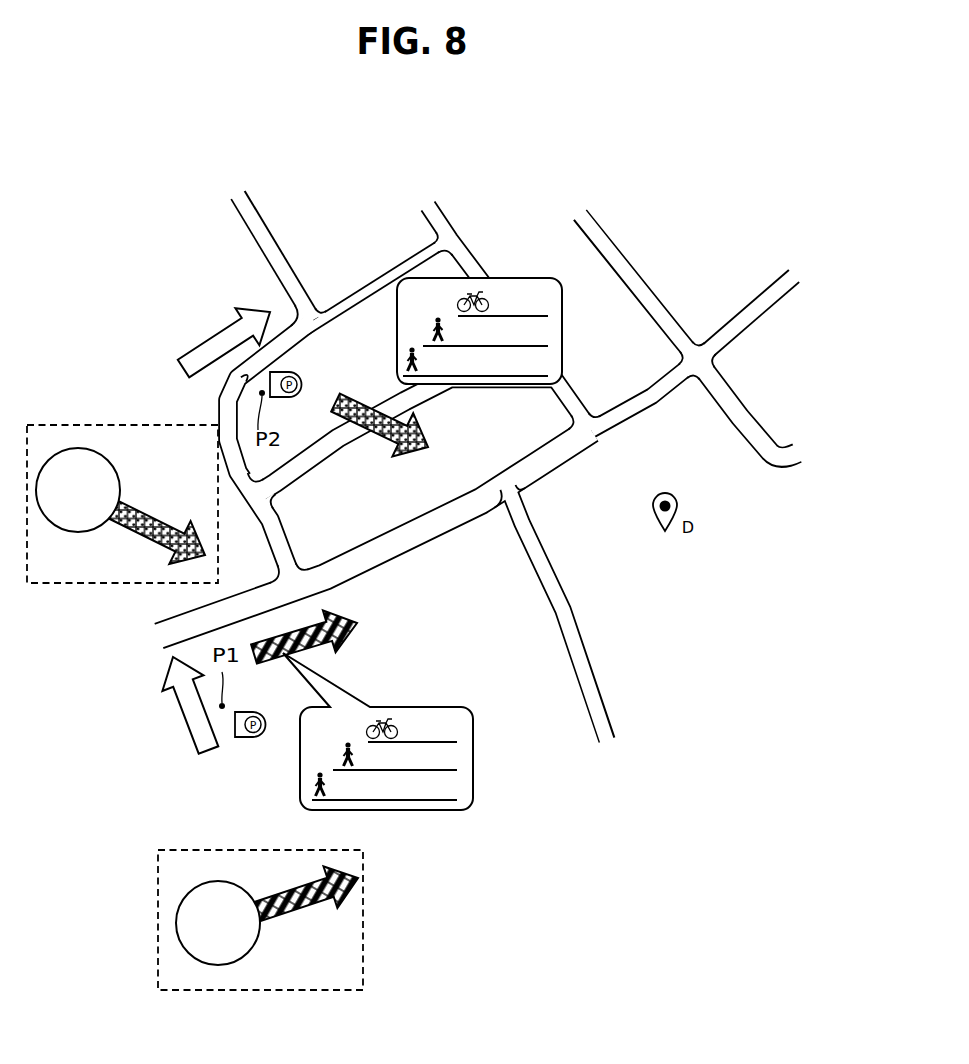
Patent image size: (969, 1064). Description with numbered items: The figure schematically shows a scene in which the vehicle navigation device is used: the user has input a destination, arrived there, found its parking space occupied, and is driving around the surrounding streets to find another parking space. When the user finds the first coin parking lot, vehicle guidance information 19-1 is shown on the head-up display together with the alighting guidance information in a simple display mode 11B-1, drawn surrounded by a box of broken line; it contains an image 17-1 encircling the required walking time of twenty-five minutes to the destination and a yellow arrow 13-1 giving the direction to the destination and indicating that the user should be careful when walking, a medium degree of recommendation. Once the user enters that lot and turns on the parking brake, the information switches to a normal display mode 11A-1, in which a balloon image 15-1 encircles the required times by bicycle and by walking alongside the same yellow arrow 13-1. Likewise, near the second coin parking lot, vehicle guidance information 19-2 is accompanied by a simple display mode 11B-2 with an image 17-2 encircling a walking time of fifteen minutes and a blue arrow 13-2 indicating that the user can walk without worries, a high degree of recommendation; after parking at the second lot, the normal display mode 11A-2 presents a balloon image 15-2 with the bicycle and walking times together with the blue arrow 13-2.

The normal display mode 11A-1 is at (418, 725).
The normal display mode 11A-2 is at (521, 286).
The simple display mode 11B-1 is at (367, 928).
The simple display mode 11B-2 is at (57, 424).
The yellow arrow 13-1 is at (333, 618).
The blue arrow 13-2 is at (373, 437).
The balloon image 15-1 is at (473, 778).
The balloon image 15-2 is at (562, 352).
The image encircling the required time 17-1 is at (177, 923).
The image encircling the required time 17-2 is at (91, 447).
The vehicle guidance information 19-1 is at (180, 700).
The vehicle guidance information 19-2 is at (205, 347).